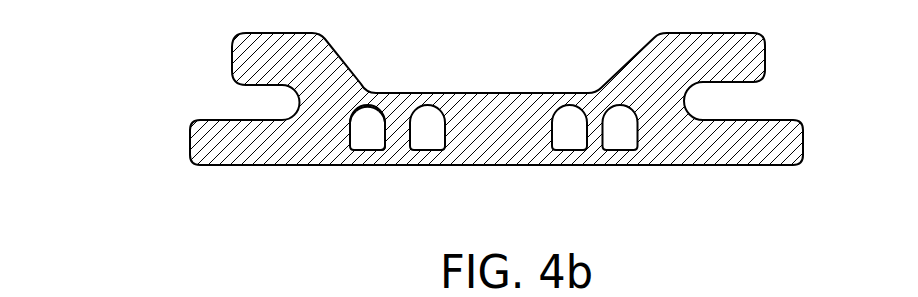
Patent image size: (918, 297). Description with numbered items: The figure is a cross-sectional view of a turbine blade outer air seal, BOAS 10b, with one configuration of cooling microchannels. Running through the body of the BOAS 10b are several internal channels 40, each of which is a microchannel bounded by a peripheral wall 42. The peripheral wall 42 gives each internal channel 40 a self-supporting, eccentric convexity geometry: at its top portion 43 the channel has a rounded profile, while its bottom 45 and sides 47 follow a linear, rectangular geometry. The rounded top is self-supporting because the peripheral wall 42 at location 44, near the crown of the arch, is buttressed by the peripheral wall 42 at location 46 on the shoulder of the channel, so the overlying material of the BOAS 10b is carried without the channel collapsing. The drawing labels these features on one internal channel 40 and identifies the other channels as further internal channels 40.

The BOAS 10b is at (172, 142).
The internal channel 40 is at (452, 119).
The peripheral wall 42 is at (380, 151).
The top portion 43 is at (379, 106).
The location 44 is at (361, 105).
The bottom 45 is at (361, 151).
The location 46 is at (353, 107).
The sides 47 is at (389, 138).